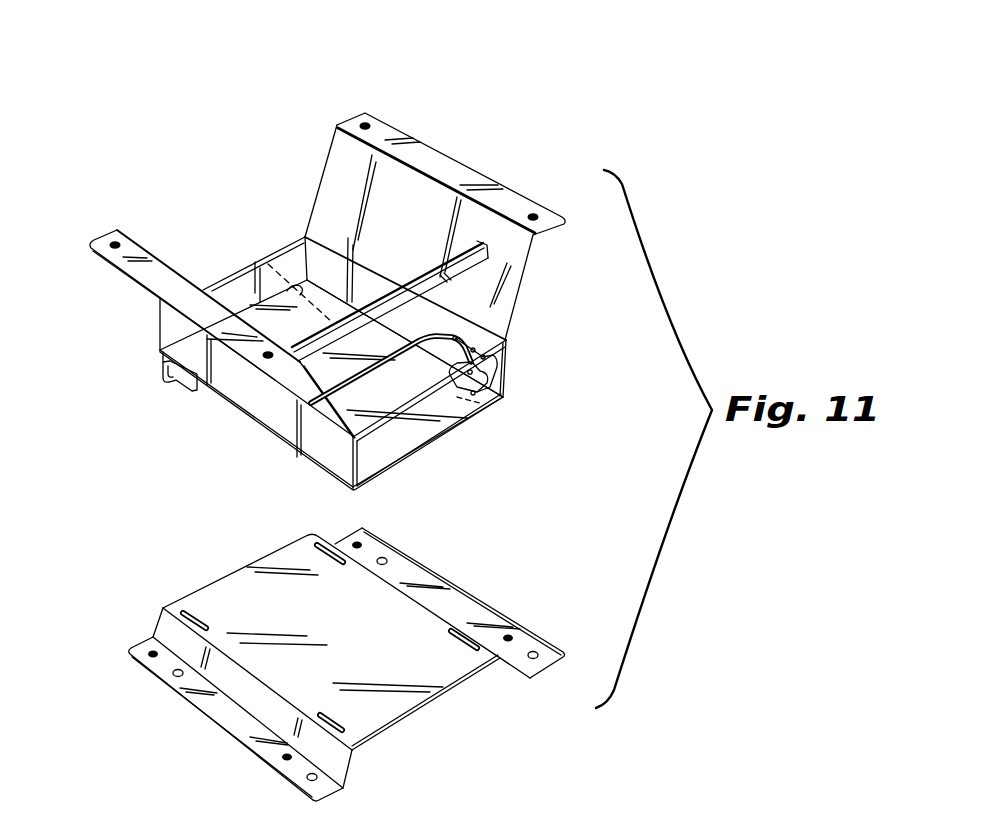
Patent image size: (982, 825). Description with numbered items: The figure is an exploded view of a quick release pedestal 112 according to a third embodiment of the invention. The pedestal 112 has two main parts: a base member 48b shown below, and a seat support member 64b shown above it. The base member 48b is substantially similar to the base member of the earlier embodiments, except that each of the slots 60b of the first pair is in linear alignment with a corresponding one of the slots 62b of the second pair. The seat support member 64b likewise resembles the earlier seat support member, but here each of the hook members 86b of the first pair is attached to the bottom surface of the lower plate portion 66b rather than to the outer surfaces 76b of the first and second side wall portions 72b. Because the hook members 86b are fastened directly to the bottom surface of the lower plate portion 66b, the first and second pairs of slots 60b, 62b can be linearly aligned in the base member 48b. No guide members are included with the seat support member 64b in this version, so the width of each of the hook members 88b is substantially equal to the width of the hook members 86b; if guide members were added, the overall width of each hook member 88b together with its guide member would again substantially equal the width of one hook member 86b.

The quick release pedestal 112 is at (490, 131).
The seat support member 64b is at (322, 106).
The outer surfaces 76b is at (267, 405).
The lower plate portion 66b is at (430, 430).
The side wall portions 72b is at (360, 463).
The hook members 88b is at (500, 390).
The hook members 86b is at (265, 261).
The base member 48b is at (143, 620).
The slots 60b is at (202, 620).
The slots 62b is at (466, 648).